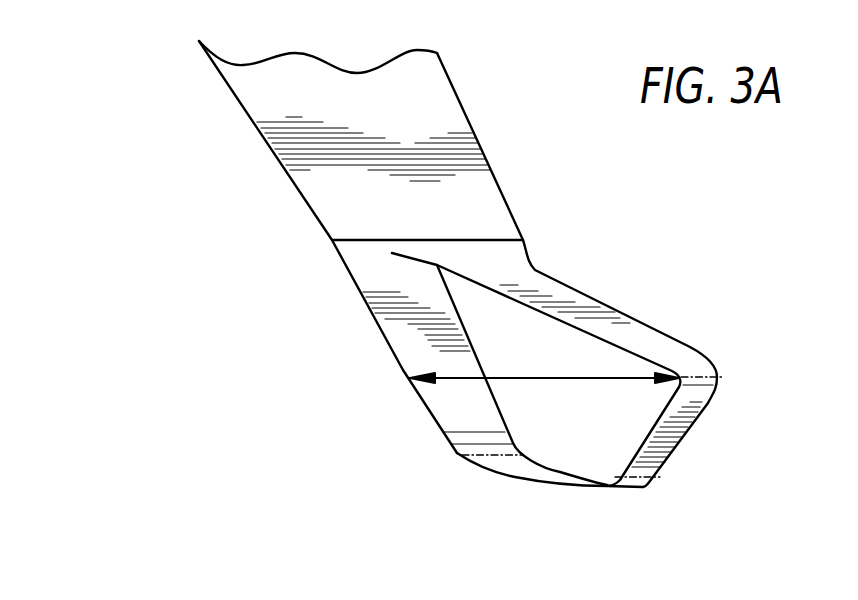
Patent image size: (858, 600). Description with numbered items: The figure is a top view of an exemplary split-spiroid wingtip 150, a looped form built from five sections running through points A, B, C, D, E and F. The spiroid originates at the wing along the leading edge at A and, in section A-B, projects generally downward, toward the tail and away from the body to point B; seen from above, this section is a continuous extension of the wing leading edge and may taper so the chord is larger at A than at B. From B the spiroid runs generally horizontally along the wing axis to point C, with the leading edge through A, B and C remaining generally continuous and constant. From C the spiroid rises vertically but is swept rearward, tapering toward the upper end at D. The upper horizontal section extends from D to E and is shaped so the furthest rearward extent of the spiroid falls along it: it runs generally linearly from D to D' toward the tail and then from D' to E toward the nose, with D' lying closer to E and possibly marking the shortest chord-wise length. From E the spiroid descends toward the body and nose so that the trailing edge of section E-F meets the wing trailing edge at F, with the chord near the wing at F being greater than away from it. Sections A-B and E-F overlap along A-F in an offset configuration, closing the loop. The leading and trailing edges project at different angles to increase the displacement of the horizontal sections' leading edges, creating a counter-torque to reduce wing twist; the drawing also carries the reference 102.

The blade body 102 is at (420, 78).
The split-spiroid wingtip 150 is at (632, 237).
The point A is at (318, 243).
The point B is at (393, 350).
The point C is at (457, 453).
The point D is at (680, 503).
The point D' is at (753, 368).
The point E is at (627, 320).
The point F is at (535, 240).